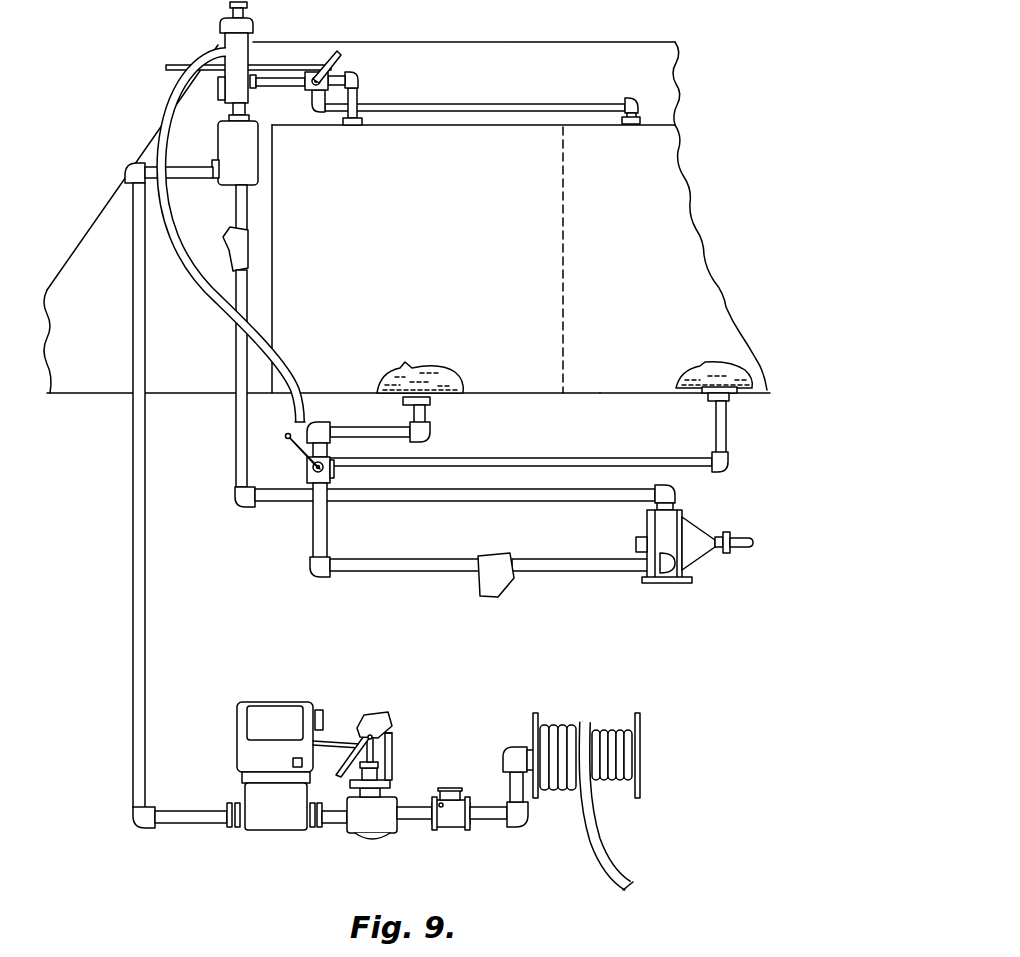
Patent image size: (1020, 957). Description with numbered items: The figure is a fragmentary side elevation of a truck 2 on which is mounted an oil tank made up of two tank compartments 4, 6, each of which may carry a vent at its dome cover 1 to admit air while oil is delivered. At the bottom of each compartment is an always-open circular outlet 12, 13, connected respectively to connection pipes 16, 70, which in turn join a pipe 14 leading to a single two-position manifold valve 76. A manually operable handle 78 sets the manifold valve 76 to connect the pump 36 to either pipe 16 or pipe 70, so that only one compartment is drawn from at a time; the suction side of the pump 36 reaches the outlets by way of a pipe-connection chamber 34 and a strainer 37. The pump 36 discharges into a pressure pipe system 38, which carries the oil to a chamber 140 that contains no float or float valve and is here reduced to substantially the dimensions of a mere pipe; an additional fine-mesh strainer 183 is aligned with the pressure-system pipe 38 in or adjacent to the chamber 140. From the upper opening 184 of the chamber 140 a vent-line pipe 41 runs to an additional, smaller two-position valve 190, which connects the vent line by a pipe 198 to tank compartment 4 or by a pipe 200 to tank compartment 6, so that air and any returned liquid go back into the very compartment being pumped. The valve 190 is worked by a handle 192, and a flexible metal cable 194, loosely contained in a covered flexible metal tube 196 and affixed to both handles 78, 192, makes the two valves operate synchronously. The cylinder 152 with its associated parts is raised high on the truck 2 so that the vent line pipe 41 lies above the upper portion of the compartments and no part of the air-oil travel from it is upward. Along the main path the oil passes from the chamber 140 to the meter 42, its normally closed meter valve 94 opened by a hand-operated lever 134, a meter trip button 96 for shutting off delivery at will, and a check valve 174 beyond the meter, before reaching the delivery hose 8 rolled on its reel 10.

The dome cover 1 is at (647, 121).
The truck 2 is at (203, 393).
The tank compartment 4 is at (500, 385).
The tank compartment 6 is at (658, 374).
The delivery hose 8 is at (615, 875).
The reel 10 is at (640, 722).
The circular outlet 12 is at (438, 397).
The circular outlet 13 is at (735, 394).
The pipe 14 is at (316, 522).
The connection pipe 16 is at (375, 428).
The pipe-connection chamber 34 is at (413, 568).
The pump 36 is at (672, 572).
The strainer 37 is at (493, 574).
The pressure pipe system 38 is at (240, 349).
The vent-line pipe 41 is at (287, 86).
The meter 42 is at (268, 707).
The connection pipe 70 is at (571, 461).
The two-position manifold valve 76 is at (307, 472).
The handle 78 is at (285, 438).
The meter valve 94 is at (368, 825).
The meter trip button 96 is at (302, 759).
The hand-operated lever 134 is at (342, 772).
The chamber 140 is at (230, 143).
The cylinder 152 is at (224, 40).
The check valve 174 is at (453, 818).
The fine-mesh strainer 183 is at (229, 244).
The upper opening 184 is at (231, 116).
The additional two-position valve 190 is at (332, 78).
The handle 192 is at (342, 57).
The flexible metal cable 194 is at (301, 65).
The flexible metal tube 196 is at (297, 362).
The pipe 198 is at (368, 101).
The pipe 200 is at (580, 104).